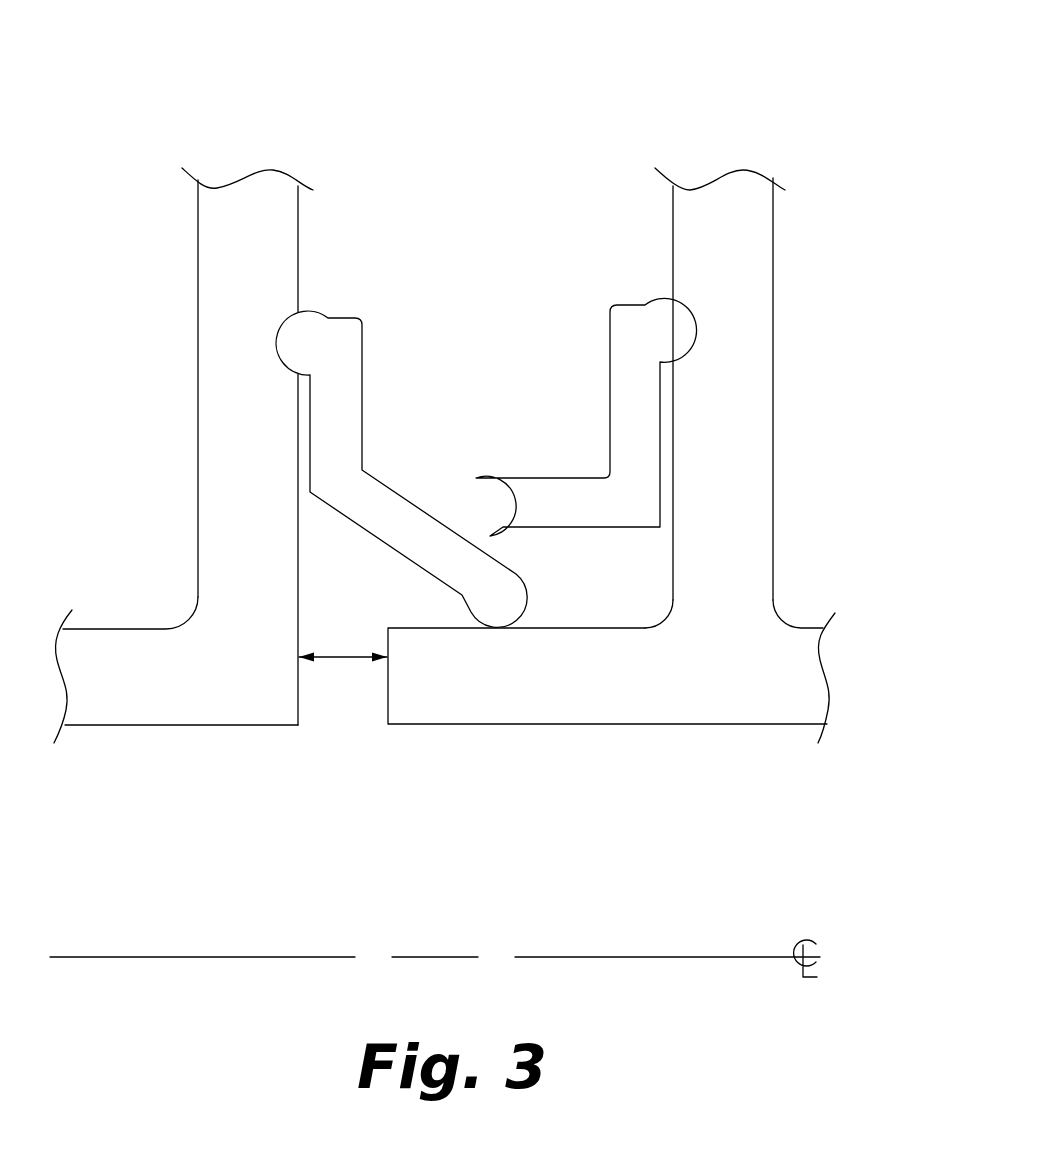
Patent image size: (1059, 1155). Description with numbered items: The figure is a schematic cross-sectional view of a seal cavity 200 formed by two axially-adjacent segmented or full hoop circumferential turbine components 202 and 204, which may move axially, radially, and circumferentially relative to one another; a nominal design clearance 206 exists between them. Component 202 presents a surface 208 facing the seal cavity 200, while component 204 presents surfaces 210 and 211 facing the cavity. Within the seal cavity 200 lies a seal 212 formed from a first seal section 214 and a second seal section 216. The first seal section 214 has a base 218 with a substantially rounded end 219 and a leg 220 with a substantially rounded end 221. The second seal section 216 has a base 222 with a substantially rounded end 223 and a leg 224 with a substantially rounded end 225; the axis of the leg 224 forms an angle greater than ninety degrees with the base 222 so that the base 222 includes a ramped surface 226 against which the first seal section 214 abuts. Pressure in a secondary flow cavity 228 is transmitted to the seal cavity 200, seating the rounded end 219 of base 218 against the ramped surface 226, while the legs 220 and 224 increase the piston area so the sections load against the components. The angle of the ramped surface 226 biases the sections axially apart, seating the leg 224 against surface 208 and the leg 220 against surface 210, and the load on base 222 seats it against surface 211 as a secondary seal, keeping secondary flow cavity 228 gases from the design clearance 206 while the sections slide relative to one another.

The seal cavity 200 is at (541, 150).
The turbine component 202 is at (160, 725).
The turbine component 204 is at (580, 725).
The nominal design clearance 206 is at (343, 658).
The surface 208 is at (300, 218).
The surface 210 is at (672, 218).
The surface 211 is at (624, 628).
The seal 212 is at (530, 327).
The first seal section 214 is at (607, 420).
The second seal section 216 is at (366, 419).
The base 218 is at (550, 477).
The substantially rounded end 219 is at (442, 503).
The leg 220 is at (609, 332).
The substantially rounded end 221 is at (668, 318).
The base 222 is at (356, 524).
The substantially rounded end 223 is at (468, 613).
The leg 224 is at (363, 340).
The substantially rounded end 225 is at (305, 318).
The ramped surface 226 is at (368, 470).
The secondary flow cavity 228 is at (432, 26).